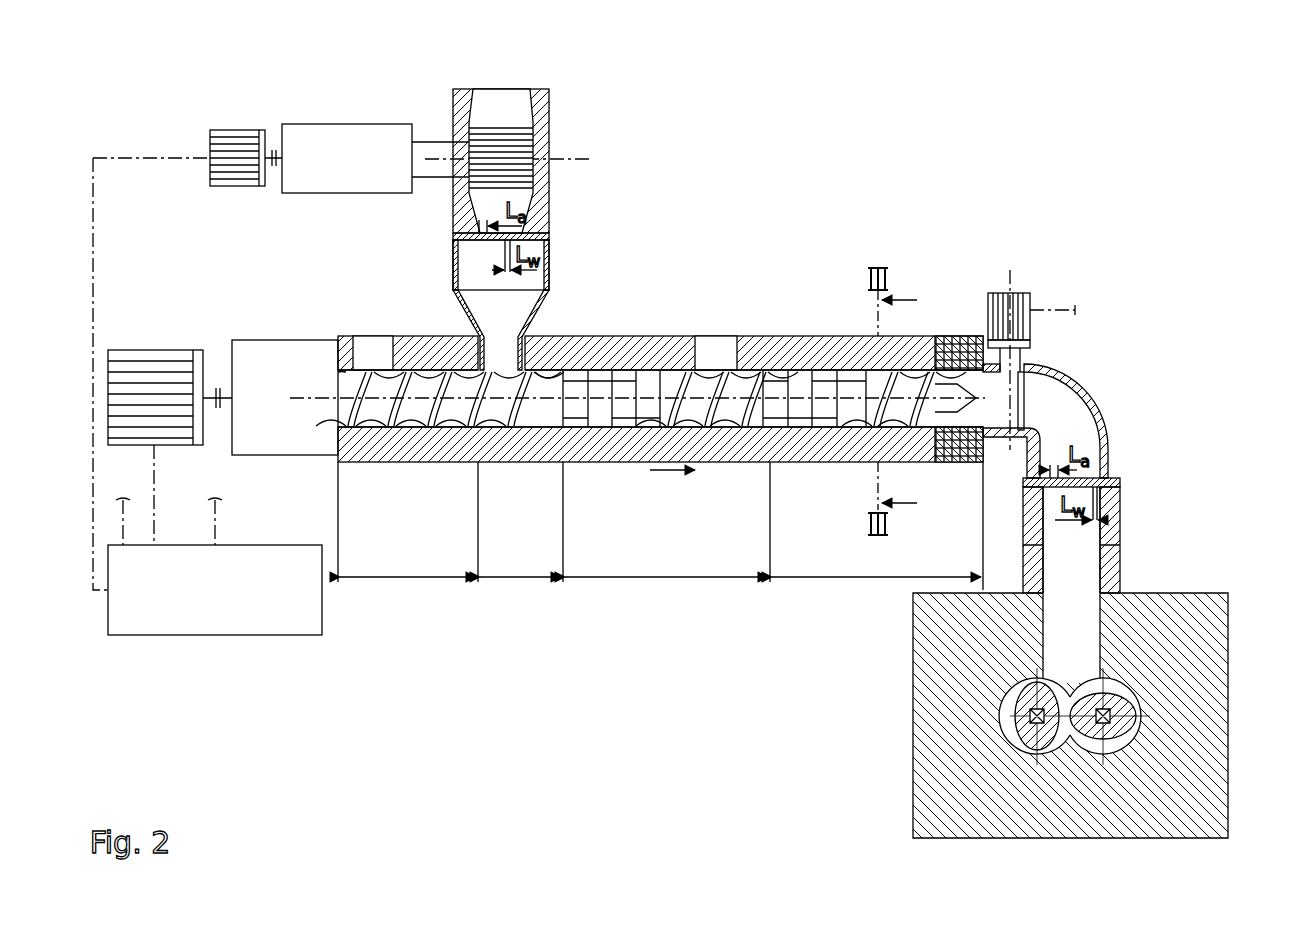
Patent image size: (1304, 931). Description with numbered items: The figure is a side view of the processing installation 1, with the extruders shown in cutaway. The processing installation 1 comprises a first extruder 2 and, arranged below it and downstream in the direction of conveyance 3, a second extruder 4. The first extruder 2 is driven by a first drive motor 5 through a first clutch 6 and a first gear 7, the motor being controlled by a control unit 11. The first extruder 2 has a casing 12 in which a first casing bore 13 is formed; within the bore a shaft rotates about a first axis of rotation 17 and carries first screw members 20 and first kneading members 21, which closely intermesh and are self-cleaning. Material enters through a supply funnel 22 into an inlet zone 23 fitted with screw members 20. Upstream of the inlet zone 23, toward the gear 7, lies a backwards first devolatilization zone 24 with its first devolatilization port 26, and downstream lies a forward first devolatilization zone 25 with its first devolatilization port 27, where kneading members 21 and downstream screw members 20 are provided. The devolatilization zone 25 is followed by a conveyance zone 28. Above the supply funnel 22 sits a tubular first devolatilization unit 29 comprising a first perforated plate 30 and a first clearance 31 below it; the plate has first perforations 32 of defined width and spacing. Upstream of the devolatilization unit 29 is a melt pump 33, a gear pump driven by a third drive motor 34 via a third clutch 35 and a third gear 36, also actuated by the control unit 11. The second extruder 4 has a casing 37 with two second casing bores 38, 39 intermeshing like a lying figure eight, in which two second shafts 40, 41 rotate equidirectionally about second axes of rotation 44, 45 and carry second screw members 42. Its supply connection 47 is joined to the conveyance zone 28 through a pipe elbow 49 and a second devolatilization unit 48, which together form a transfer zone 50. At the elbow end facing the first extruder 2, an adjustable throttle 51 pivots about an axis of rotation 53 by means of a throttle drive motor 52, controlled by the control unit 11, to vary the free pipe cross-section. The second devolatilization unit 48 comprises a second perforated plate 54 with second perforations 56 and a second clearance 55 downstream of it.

The processing installation 1 is at (787, 165).
The first extruder 2 is at (298, 306).
The direction of conveyance 3 is at (672, 478).
The second extruder 4 is at (1217, 592).
The first drive motor 5 is at (150, 348).
The first clutch 6 is at (215, 388).
The first gear 7 is at (258, 340).
The control unit 11 is at (240, 637).
The casing 12 is at (663, 334).
The first casing bore 13 is at (827, 377).
The first axis of rotation 17 is at (308, 385).
The first screw members 20 is at (400, 414).
The first kneading members 21 is at (622, 422).
The supply funnel 22 is at (540, 312).
The inlet zone 23 is at (520, 565).
The first devolatilization zone 24 is at (408, 565).
The first devolatilization zone 25 is at (666, 565).
The first devolatilization port 26 is at (370, 352).
The first devolatilization port 27 is at (710, 347).
The conveyance zone 28 is at (876, 565).
The first devolatilization unit 29 is at (553, 260).
The first perforated plate 30 is at (552, 235).
The first clearance 31 is at (460, 250).
The first perforations 32 is at (460, 224).
The melt pump 33 is at (544, 135).
The third drive motor 34 is at (232, 128).
The third clutch 35 is at (276, 150).
The third gear 36 is at (328, 126).
The casing 37 is at (1232, 625).
The second casing bore 38 is at (1125, 700).
The second casing bore 39 is at (1005, 700).
The second shaft 40 is at (1118, 712).
The second shaft 41 is at (1030, 712).
The second screw members 42 is at (1032, 722).
The second axis of rotation 44 is at (1130, 745).
The second axis of rotation 45 is at (1010, 745).
The supply connection 47 is at (1115, 562).
The second devolatilization unit 48 is at (1127, 494).
The pipe elbow 49 is at (1108, 430).
The transfer zone 50 is at (1013, 395).
The adjustable throttle 51 is at (1023, 367).
The throttle drive motor 52 is at (1025, 320).
The axis of rotation 53 is at (1010, 293).
The second perforated plate 54 is at (1120, 484).
The second clearance 55 is at (1100, 528).
The second perforations 56 is at (1110, 470).